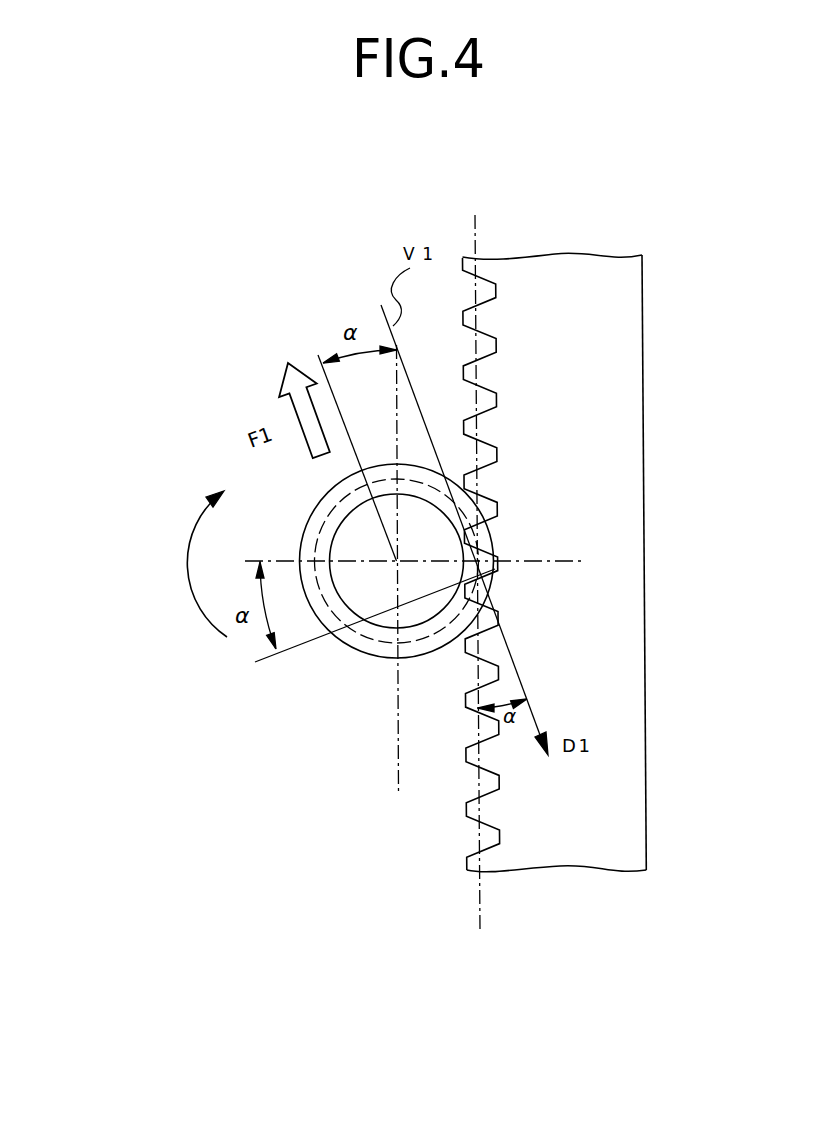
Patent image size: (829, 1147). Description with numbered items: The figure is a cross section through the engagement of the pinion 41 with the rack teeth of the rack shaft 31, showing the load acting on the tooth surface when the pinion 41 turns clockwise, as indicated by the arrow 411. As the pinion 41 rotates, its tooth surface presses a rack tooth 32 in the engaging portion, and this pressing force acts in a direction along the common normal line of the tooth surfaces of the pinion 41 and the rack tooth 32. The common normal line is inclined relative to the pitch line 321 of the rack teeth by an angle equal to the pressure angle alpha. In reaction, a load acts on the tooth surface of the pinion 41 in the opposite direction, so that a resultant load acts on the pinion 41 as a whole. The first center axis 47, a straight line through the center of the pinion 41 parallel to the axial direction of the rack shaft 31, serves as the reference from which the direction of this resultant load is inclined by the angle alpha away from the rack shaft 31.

The rack shaft 31 is at (645, 758).
The rack tooth 32 is at (489, 848).
The pitch line 321 is at (481, 917).
The pinion 41 is at (363, 653).
The arrow 411 is at (184, 570).
The first center axis 47 is at (398, 757).